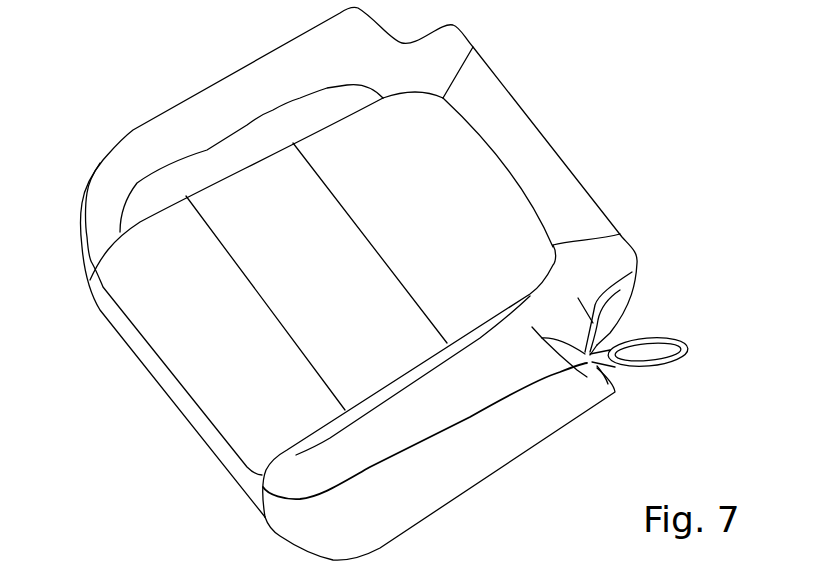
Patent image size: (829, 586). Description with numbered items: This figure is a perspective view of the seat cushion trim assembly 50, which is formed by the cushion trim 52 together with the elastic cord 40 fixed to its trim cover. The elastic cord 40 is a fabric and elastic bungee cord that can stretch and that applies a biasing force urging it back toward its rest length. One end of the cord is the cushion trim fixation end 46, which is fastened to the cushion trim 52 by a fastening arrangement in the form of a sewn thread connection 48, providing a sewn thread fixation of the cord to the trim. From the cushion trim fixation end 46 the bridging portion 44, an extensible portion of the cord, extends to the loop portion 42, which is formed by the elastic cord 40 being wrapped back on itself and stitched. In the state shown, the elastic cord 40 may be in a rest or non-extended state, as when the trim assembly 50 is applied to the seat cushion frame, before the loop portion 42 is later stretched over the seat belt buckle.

The elastic cord 40 is at (683, 367).
The loop portion 42 is at (683, 342).
The bridging portion 44 is at (600, 362).
The cushion trim fixation end 46 is at (600, 350).
The sewn thread connection 48 is at (588, 376).
The seat cushion trim assembly 50 is at (584, 149).
The cushion trim 52 is at (435, 495).